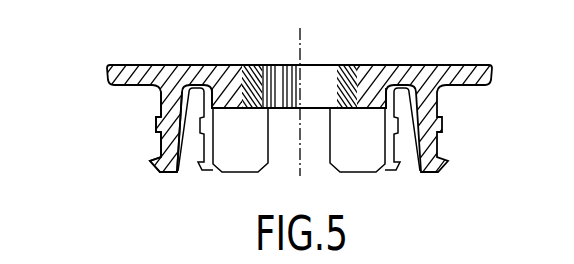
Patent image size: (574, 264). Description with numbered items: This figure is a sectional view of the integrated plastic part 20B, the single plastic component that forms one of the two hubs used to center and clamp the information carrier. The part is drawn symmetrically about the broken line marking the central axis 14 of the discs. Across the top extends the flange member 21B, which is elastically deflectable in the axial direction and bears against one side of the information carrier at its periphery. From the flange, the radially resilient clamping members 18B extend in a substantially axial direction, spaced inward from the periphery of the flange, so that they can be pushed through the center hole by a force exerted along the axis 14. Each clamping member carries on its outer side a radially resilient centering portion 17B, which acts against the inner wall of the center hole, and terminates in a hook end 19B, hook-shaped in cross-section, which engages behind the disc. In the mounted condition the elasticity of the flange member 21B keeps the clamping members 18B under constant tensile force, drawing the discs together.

The flange member 21B is at (128, 74).
The integrated plastic part 20B is at (222, 75).
The centering portion 17B is at (155, 122).
The clamping member 18B is at (167, 144).
The hook end 19B is at (157, 164).
The central axis 14 is at (303, 48).